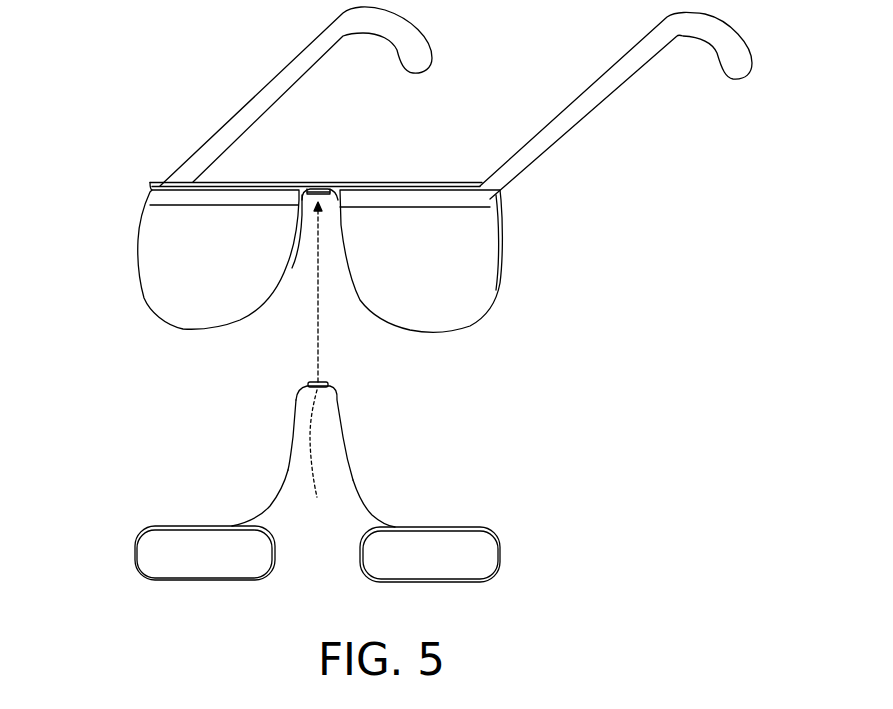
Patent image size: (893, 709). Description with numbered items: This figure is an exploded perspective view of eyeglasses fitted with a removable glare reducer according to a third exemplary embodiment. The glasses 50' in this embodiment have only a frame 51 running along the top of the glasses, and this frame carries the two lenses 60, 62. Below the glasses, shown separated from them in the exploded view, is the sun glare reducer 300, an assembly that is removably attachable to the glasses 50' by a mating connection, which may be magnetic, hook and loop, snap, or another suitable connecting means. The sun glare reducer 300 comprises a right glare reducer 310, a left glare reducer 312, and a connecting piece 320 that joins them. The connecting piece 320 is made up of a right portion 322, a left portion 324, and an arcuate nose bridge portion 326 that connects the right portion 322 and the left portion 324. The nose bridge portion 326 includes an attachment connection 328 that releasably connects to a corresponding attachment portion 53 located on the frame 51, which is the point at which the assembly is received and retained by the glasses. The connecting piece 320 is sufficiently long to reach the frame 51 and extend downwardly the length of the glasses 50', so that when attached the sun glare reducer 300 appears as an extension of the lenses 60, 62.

The glasses 50' is at (449, 103).
The frame 51 is at (393, 183).
The attachment portion 53 is at (315, 183).
The lens 60 is at (138, 245).
The lens 62 is at (490, 283).
The sun glare reducer 300 is at (318, 493).
The right glare reducer 310 is at (133, 552).
The left glare reducer 312 is at (500, 552).
The connecting piece 320 is at (343, 437).
The right portion 322 is at (287, 427).
The left portion 324 is at (360, 498).
The nose bridge portion 326 is at (334, 391).
The attachment connection 328 is at (319, 462).